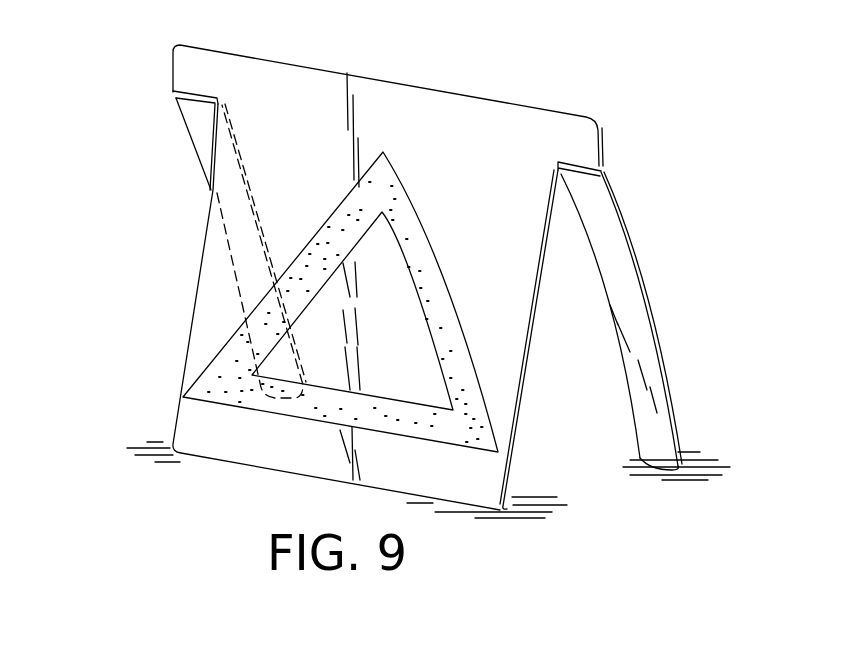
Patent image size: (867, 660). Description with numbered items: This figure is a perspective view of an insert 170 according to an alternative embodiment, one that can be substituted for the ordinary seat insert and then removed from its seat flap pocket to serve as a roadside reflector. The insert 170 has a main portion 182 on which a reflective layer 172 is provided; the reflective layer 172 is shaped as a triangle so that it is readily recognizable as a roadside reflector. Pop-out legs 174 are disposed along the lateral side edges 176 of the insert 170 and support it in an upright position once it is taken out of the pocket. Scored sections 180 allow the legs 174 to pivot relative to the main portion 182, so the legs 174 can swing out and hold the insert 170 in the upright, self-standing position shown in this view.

The insert 170 is at (560, 90).
The reflective layer 172 is at (240, 362).
The pop-out legs 174 is at (205, 143).
The lateral side edges 176 is at (192, 134).
The scored sections 180 is at (178, 97).
The main portion 182 is at (452, 125).